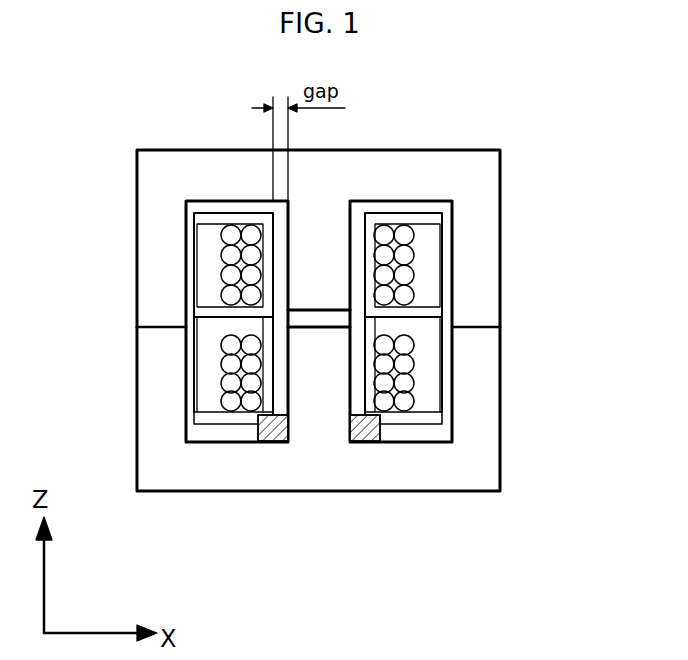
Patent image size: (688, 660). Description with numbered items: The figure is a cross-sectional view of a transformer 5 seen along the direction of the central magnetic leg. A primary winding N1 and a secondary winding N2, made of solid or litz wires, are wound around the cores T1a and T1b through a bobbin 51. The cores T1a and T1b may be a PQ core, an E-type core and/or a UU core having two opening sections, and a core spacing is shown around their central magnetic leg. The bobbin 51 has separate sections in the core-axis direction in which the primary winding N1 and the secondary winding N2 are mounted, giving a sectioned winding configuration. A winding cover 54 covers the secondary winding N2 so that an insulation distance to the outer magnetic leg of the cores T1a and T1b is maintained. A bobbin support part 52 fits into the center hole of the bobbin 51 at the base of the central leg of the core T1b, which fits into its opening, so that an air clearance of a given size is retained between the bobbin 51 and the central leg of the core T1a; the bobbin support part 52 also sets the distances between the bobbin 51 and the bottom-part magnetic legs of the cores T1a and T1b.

The transformer 5 is at (110, 119).
The winding cover 54 is at (187, 258).
The secondary winding N2 is at (404, 277).
The primary winding N1 is at (404, 365).
The bobbin 51 is at (228, 424).
The bobbin support part 52 is at (277, 445).
The core T1a is at (480, 178).
The core T1b is at (480, 474).